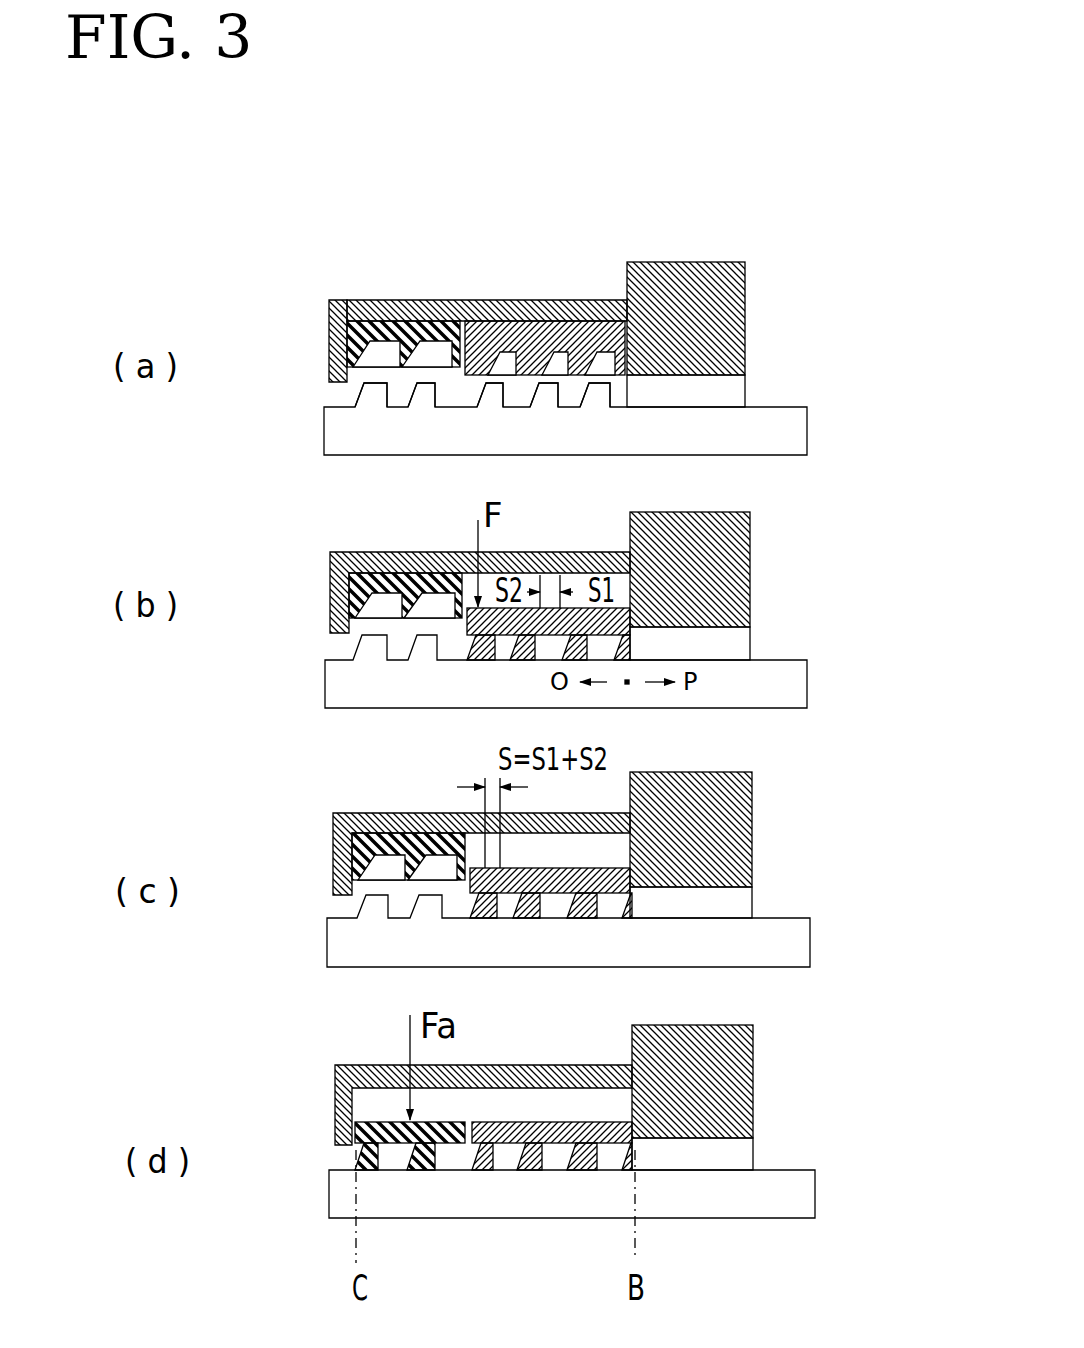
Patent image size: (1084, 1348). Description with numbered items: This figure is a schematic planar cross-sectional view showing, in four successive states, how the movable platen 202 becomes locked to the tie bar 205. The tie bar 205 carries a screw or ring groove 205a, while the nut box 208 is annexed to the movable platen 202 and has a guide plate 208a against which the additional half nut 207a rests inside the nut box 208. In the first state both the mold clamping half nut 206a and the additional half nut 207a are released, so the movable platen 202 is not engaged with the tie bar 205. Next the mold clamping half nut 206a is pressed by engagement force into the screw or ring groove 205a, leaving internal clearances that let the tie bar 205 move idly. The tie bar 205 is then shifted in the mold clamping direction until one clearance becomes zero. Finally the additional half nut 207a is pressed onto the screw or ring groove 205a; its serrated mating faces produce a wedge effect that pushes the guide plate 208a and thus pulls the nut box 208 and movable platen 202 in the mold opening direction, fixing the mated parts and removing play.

The movable platen 202 is at (700, 315).
The tie bar 205 is at (752, 438).
The screw or ring groove 205a is at (422, 397).
The mold clamping half nut 206a is at (551, 325).
The additional half nut 207a is at (416, 322).
The nut box 208 is at (490, 303).
The guide plate 208a is at (322, 318).